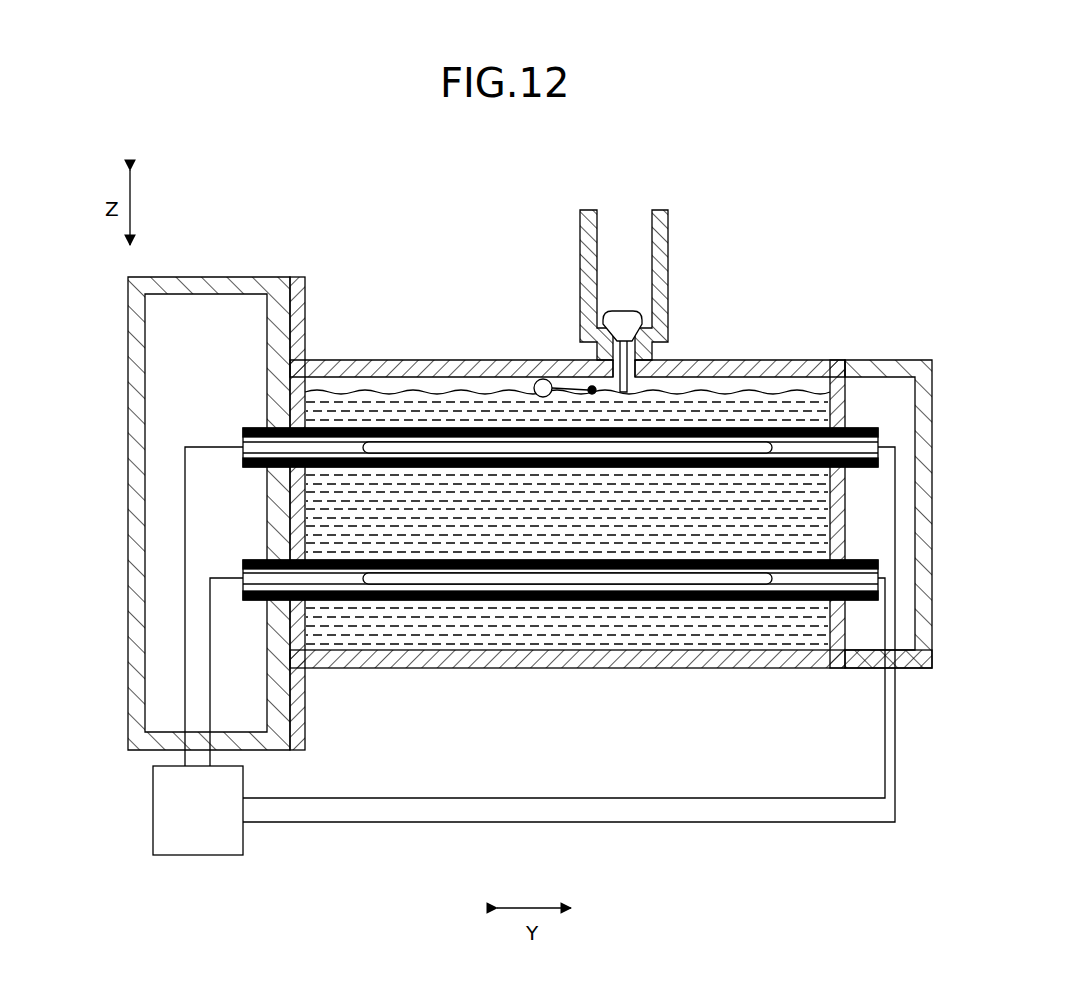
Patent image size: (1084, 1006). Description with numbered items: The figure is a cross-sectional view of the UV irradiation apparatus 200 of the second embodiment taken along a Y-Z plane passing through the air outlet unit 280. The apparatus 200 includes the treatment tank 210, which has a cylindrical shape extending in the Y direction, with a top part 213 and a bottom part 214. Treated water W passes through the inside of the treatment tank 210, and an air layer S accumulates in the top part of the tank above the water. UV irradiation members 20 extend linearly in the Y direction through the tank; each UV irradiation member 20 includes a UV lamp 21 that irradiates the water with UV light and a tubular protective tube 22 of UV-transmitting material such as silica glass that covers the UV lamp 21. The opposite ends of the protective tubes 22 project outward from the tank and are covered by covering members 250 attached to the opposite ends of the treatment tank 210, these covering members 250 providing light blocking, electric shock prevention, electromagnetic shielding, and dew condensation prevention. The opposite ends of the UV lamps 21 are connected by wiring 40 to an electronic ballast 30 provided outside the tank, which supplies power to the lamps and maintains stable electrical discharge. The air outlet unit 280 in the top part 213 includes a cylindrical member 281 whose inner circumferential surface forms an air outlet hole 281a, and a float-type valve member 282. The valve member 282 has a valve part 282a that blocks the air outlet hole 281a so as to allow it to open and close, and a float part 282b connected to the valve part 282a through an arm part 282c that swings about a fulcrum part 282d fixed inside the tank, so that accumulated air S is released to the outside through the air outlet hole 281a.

The UV irradiation apparatus 200 is at (240, 208).
The covering member 250 is at (193, 277).
The treatment tank 210 is at (611, 513).
The top part 213 is at (437, 359).
The bottom part 214 is at (432, 668).
The treated water W is at (344, 392).
The air layer S is at (806, 386).
The UV irradiation member 20 is at (560, 517).
The UV lamp 21 is at (758, 445).
The protective tube 22 is at (790, 430).
The wiring 40 is at (185, 647).
The electronic ballast 30 is at (197, 857).
The air outlet unit 280 is at (535, 275).
The cylindrical member 281 is at (624, 286).
The air outlet hole 281a is at (640, 358).
The valve member 282 is at (493, 296).
The valve part 282a is at (622, 318).
The float part 282b is at (538, 382).
The arm part 282c is at (597, 352).
The fulcrum part 282d is at (590, 388).